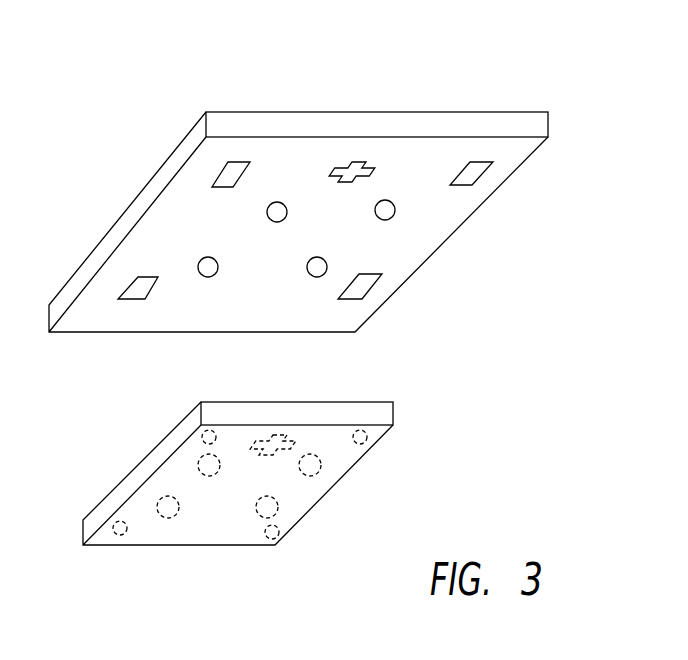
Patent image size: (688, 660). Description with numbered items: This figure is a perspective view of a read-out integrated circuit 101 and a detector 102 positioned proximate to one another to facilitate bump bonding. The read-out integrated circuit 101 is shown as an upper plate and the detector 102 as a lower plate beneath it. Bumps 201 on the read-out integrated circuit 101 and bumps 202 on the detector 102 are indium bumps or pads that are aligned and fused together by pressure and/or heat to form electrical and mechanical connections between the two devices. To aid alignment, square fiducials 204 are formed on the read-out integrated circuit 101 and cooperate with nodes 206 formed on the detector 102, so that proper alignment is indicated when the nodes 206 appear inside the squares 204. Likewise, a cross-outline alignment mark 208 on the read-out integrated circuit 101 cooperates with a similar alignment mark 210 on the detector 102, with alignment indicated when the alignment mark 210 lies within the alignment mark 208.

The read-out integrated circuit 101 is at (496, 112).
The detector 102 is at (205, 546).
The bumps 201 is at (276, 222).
The bumps 202 is at (320, 468).
The square fiducials 204 is at (465, 180).
The nodes 206 is at (204, 436).
The alignment marks 208 is at (346, 184).
The alignment marks 210 is at (281, 432).